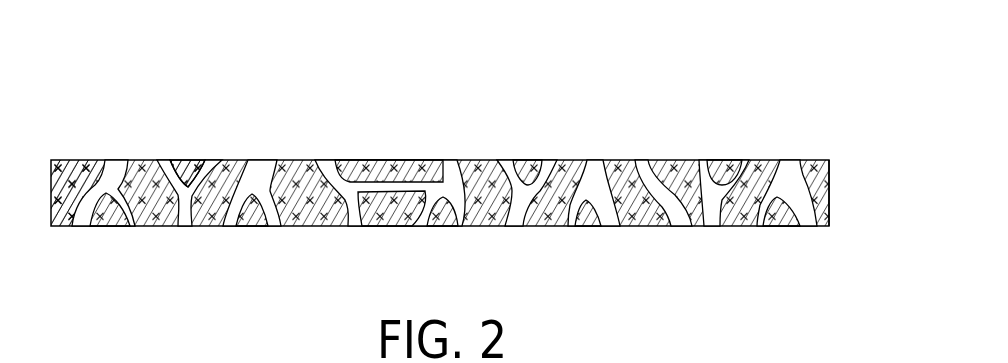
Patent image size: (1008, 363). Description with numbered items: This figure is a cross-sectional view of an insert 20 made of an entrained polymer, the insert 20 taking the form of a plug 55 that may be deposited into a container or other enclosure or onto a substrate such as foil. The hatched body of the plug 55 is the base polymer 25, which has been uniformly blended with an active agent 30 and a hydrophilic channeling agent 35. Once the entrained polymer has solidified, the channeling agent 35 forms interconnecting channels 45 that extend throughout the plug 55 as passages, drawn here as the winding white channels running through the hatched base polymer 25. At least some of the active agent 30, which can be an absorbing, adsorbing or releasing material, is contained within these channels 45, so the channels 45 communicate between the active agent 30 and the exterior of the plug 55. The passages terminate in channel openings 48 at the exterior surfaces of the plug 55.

The insert 20 is at (643, 138).
The base polymer material 25 is at (70, 160).
The active agent 30 is at (352, 220).
The channeling agent 35 is at (213, 160).
The interconnecting channels 45 is at (165, 160).
The channel openings 48 is at (552, 160).
The plug 55 is at (846, 176).